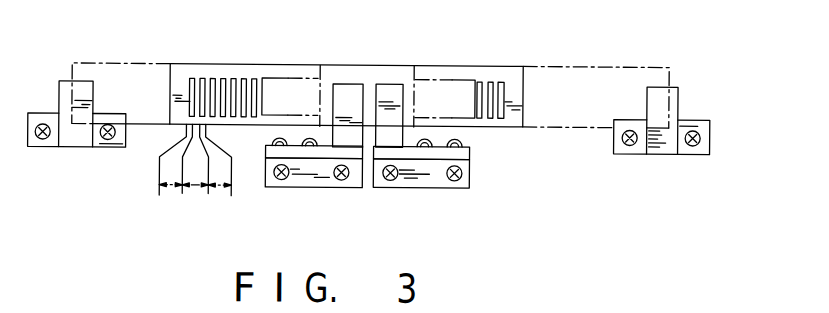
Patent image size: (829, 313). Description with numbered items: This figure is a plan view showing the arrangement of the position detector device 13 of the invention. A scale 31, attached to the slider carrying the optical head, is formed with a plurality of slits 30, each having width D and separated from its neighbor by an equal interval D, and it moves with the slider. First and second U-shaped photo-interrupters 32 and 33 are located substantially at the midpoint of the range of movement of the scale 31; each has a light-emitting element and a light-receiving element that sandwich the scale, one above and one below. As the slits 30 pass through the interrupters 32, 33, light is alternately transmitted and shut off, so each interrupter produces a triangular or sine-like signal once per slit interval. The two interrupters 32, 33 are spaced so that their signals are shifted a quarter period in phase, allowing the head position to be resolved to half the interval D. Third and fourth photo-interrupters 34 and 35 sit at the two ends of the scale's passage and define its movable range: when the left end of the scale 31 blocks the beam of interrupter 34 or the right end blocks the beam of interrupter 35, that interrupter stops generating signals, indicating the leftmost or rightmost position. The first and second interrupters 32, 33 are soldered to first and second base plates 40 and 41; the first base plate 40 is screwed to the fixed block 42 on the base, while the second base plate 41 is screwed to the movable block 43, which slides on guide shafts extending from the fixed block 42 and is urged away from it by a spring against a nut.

The punching and cutting apparatus 13 is at (499, 168).
The slits 30 is at (213, 80).
The scale 31 is at (450, 69).
The first photo-interrupter 32 is at (348, 88).
The second photo-interrupter 33 is at (390, 90).
The third photo-interrupter 34 is at (77, 146).
The fourth photo-interrupter 35 is at (661, 150).
The first base plate 40 is at (313, 154).
The second base plate 41 is at (415, 153).
The fixed block 42 is at (328, 183).
The movable block 43 is at (442, 182).